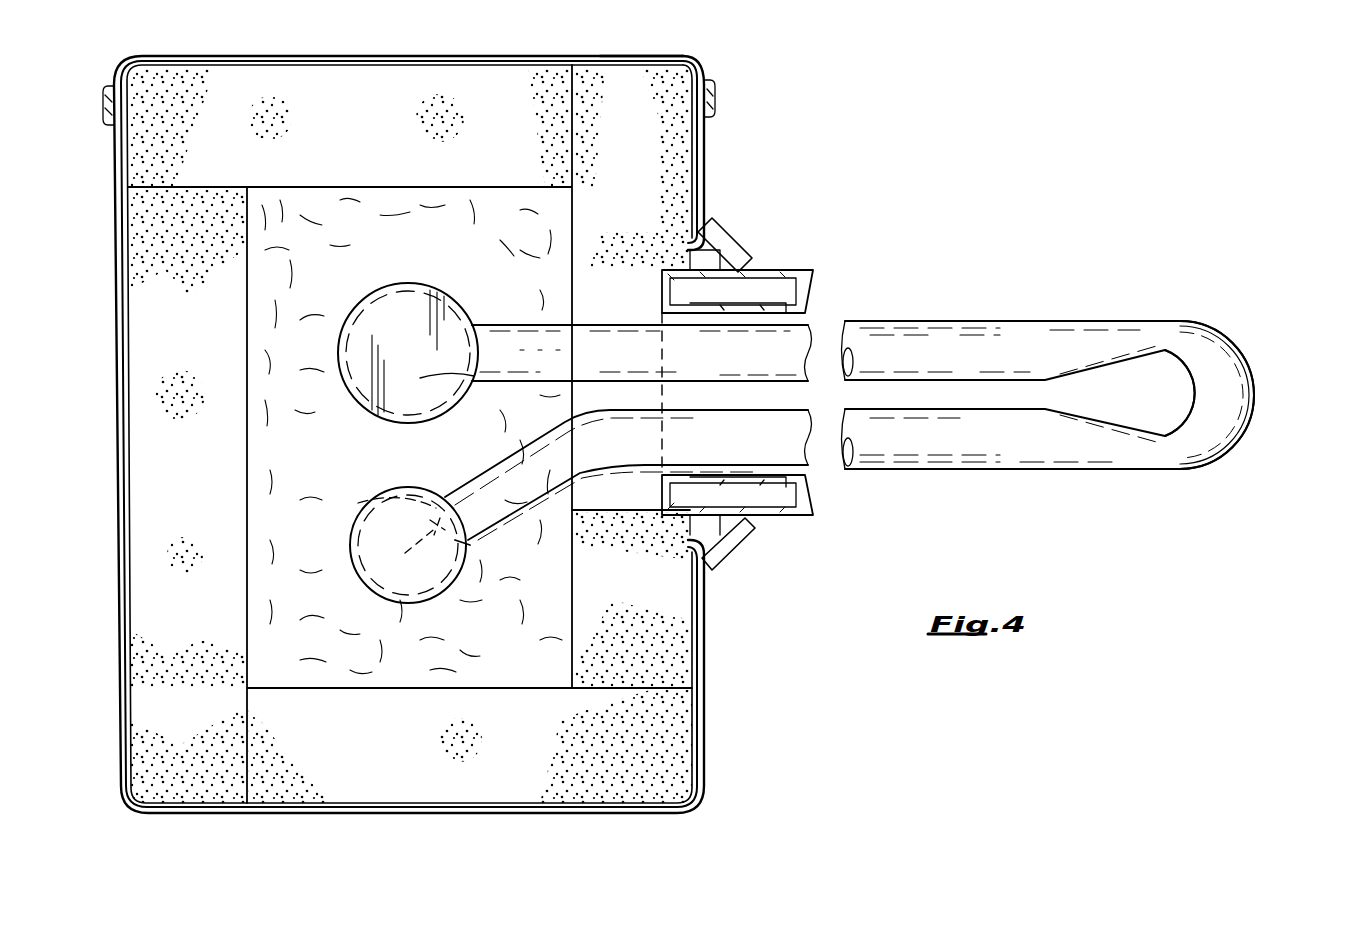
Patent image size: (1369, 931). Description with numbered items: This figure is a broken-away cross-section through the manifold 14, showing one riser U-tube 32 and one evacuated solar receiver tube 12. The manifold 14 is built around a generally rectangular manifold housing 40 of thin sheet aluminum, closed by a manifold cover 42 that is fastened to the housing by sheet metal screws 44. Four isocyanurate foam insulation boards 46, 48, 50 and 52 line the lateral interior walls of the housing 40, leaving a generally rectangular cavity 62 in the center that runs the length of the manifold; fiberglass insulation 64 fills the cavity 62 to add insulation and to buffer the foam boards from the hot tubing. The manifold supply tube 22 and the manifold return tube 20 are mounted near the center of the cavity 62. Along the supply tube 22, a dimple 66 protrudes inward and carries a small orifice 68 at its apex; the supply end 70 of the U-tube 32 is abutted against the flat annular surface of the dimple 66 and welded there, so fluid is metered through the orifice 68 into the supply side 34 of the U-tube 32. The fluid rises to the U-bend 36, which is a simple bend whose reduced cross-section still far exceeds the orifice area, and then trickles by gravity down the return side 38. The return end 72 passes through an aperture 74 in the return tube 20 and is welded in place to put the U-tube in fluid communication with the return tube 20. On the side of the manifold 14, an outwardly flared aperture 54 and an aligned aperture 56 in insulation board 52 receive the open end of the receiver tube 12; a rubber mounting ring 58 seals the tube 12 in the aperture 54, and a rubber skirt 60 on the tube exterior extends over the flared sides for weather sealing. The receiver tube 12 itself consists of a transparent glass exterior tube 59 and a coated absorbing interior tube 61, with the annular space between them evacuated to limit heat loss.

The evacuated solar receiver tube 12 is at (786, 266).
The manifold 14 is at (185, 42).
The manifold return tube 20 is at (352, 304).
The manifold supply tube 22 is at (410, 486).
The riser U-tube 32 is at (1266, 417).
The supply side 34 is at (908, 471).
The U-bend 36 is at (1255, 371).
The return side 38 is at (913, 321).
The manifold housing 40 is at (704, 180).
The manifold cover 42 is at (575, 56).
The sheet metal screws 44 is at (103, 101).
The isocyanurate foam insulation board 46 is at (352, 118).
The isocyanurate foam insulation board 48 is at (178, 511).
The isocyanurate foam insulation board 50 is at (532, 750).
The isocyanurate foam insulation board 52 is at (641, 184).
The outwardly flared aperture 54 is at (706, 517).
The aperture 56 is at (613, 510).
The rubber mounting ring 58 is at (733, 392).
The exterior tube 59 is at (811, 271).
The rubber skirt 60 is at (734, 236).
The interior tube 61 is at (781, 309).
The cavity 62 is at (310, 469).
The fiberglass insulation 64 is at (510, 628).
The dimple 66 is at (372, 504).
The orifice 68 is at (409, 544).
The supply end 70 is at (470, 542).
The return end 72 is at (490, 307).
The aperture 74 is at (432, 381).